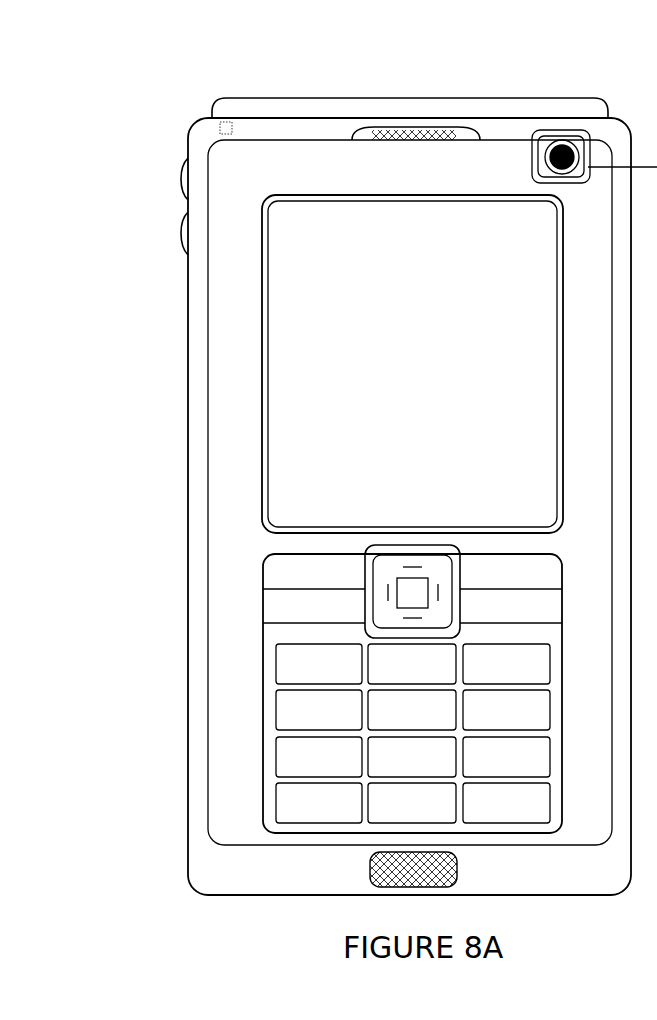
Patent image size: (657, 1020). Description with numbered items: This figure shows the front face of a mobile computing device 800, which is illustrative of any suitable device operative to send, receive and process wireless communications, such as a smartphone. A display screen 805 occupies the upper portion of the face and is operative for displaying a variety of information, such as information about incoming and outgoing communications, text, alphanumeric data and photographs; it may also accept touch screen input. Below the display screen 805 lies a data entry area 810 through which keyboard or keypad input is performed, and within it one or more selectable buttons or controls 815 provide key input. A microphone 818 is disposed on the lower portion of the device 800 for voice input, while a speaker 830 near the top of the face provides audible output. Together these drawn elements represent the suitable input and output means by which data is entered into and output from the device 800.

The mobile computing device 800 is at (180, 124).
The display screen 805 is at (300, 345).
The data entry area 810 is at (263, 600).
The selectable buttons or controls 815 is at (288, 708).
The microphone 818 is at (370, 873).
The speaker 830 is at (460, 130).